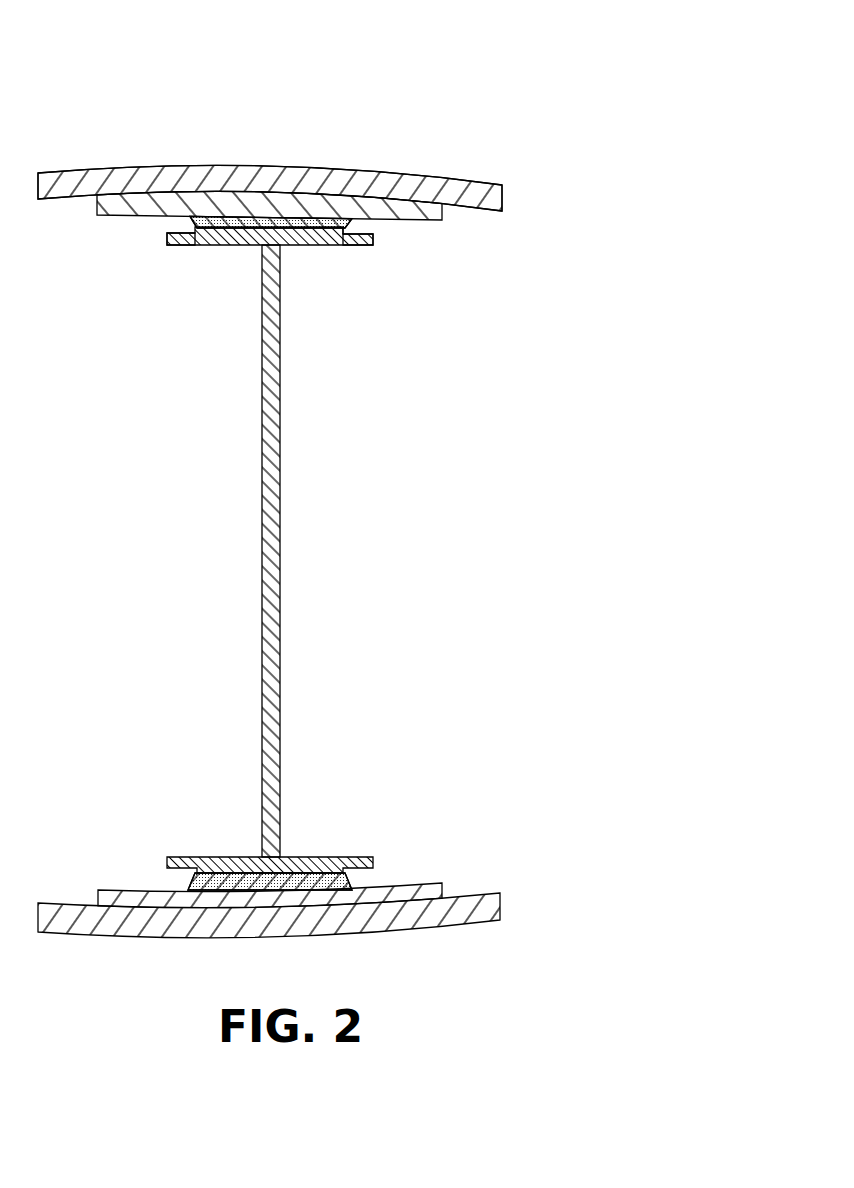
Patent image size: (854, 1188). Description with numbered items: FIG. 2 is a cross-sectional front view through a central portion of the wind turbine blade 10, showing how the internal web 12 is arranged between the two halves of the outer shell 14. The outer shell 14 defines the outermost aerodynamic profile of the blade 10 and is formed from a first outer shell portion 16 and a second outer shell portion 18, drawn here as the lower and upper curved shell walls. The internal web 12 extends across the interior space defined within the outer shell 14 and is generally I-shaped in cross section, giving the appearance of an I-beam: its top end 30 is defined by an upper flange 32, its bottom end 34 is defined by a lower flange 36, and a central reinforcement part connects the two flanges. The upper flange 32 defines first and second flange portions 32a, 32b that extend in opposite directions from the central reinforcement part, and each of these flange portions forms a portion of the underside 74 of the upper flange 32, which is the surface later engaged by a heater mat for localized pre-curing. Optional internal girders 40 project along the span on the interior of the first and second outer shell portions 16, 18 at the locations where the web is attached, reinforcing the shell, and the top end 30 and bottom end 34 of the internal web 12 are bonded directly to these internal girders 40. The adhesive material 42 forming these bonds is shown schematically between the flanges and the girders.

The wind turbine blade 10 is at (430, 68).
The internal web 12 is at (260, 520).
The outer shell 14 is at (417, 172).
The first outer shell portion 16 is at (82, 935).
The second outer shell portion 18 is at (78, 180).
The top end 30 is at (262, 539).
The upper flange 32 is at (223, 245).
The first flange portion 32a is at (177, 247).
The second flange portion 32b is at (362, 246).
The bottom end 34 is at (240, 845).
The lower flange 36 is at (303, 857).
The internal girders 40 is at (178, 207).
The adhesive material 42 is at (292, 220).
The underside 74 is at (318, 246).